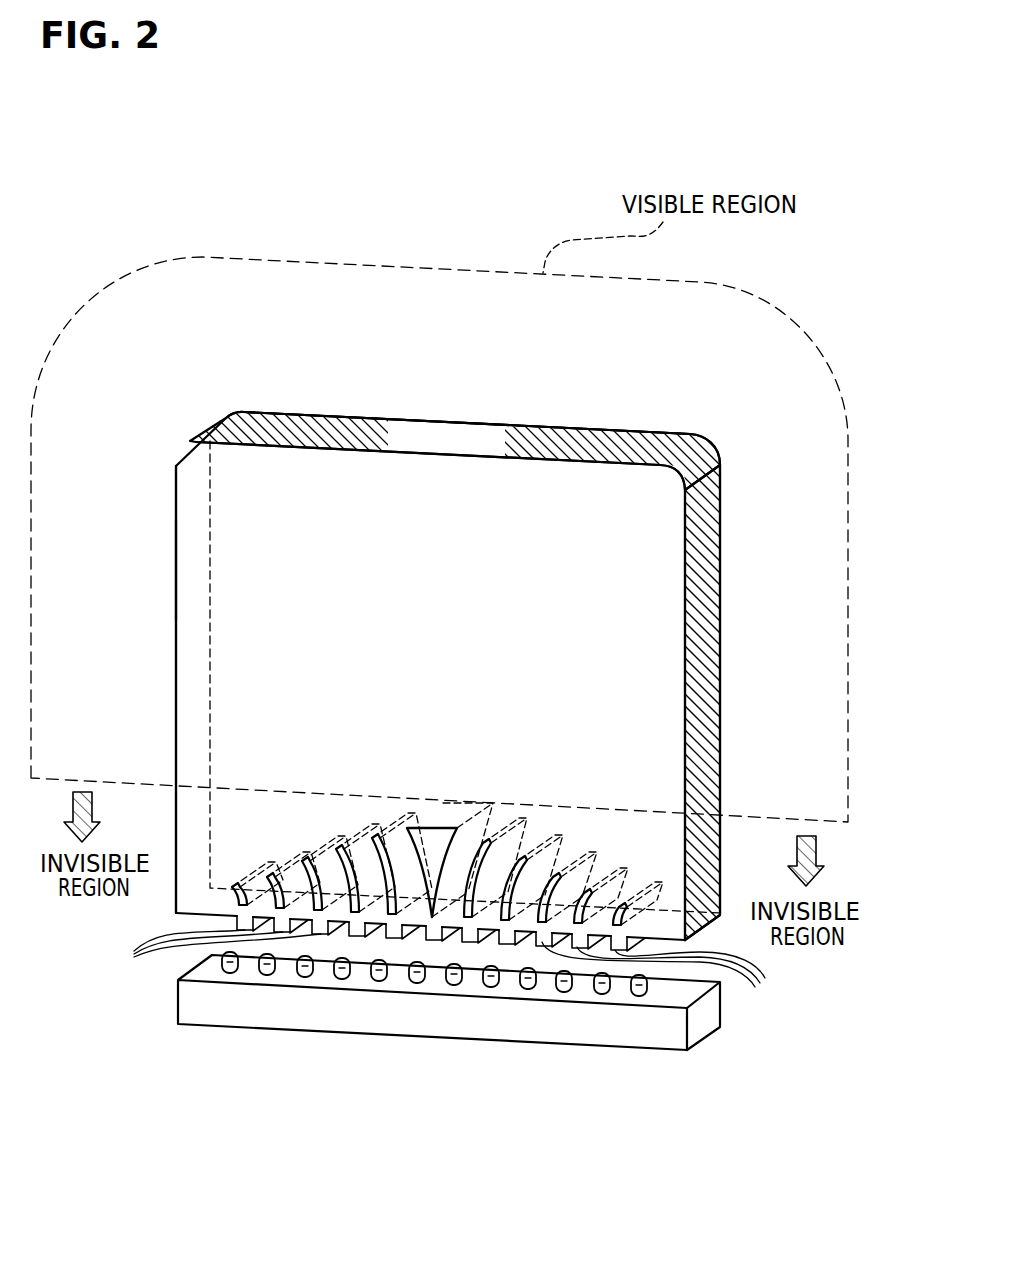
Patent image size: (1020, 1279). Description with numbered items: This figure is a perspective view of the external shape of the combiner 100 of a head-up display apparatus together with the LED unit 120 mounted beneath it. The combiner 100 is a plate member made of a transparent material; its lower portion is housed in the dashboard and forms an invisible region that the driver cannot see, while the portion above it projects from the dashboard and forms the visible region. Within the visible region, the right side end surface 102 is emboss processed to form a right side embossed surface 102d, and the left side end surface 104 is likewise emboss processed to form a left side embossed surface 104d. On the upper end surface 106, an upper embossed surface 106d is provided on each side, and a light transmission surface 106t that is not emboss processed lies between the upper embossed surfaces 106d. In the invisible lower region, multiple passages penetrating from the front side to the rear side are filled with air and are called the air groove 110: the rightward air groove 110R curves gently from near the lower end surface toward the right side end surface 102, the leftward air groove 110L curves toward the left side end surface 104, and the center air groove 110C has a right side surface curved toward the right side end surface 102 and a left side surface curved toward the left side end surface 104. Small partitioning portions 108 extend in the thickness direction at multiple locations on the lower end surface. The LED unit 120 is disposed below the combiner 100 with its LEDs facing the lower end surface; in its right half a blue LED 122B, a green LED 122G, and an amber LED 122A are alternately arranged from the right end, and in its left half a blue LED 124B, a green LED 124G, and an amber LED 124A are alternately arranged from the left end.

The combiner 100 is at (218, 215).
The right side end surface 102 is at (772, 680).
The right side embossed surface 102d is at (703, 612).
The left side end surface 104 is at (120, 623).
The left side embossed surface 104d is at (176, 566).
The upper end surface 106 is at (406, 312).
The upper embossed surface 106d is at (307, 432).
The light transmission surface 106t is at (455, 437).
The partitioning portion 108 is at (444, 971).
The air groove 110 is at (447, 790).
The leftward air groove 110L is at (376, 838).
The center air groove 110C is at (433, 826).
The rightward air groove 110R is at (563, 825).
The LED unit 120 is at (178, 1000).
The amber LED 122A is at (454, 985).
The blue LED 122B is at (690, 1087).
The green LED 122G is at (652, 1122).
The amber LED 124A is at (305, 977).
The blue LED 124B is at (305, 1073).
The green LED 124G is at (267, 975).